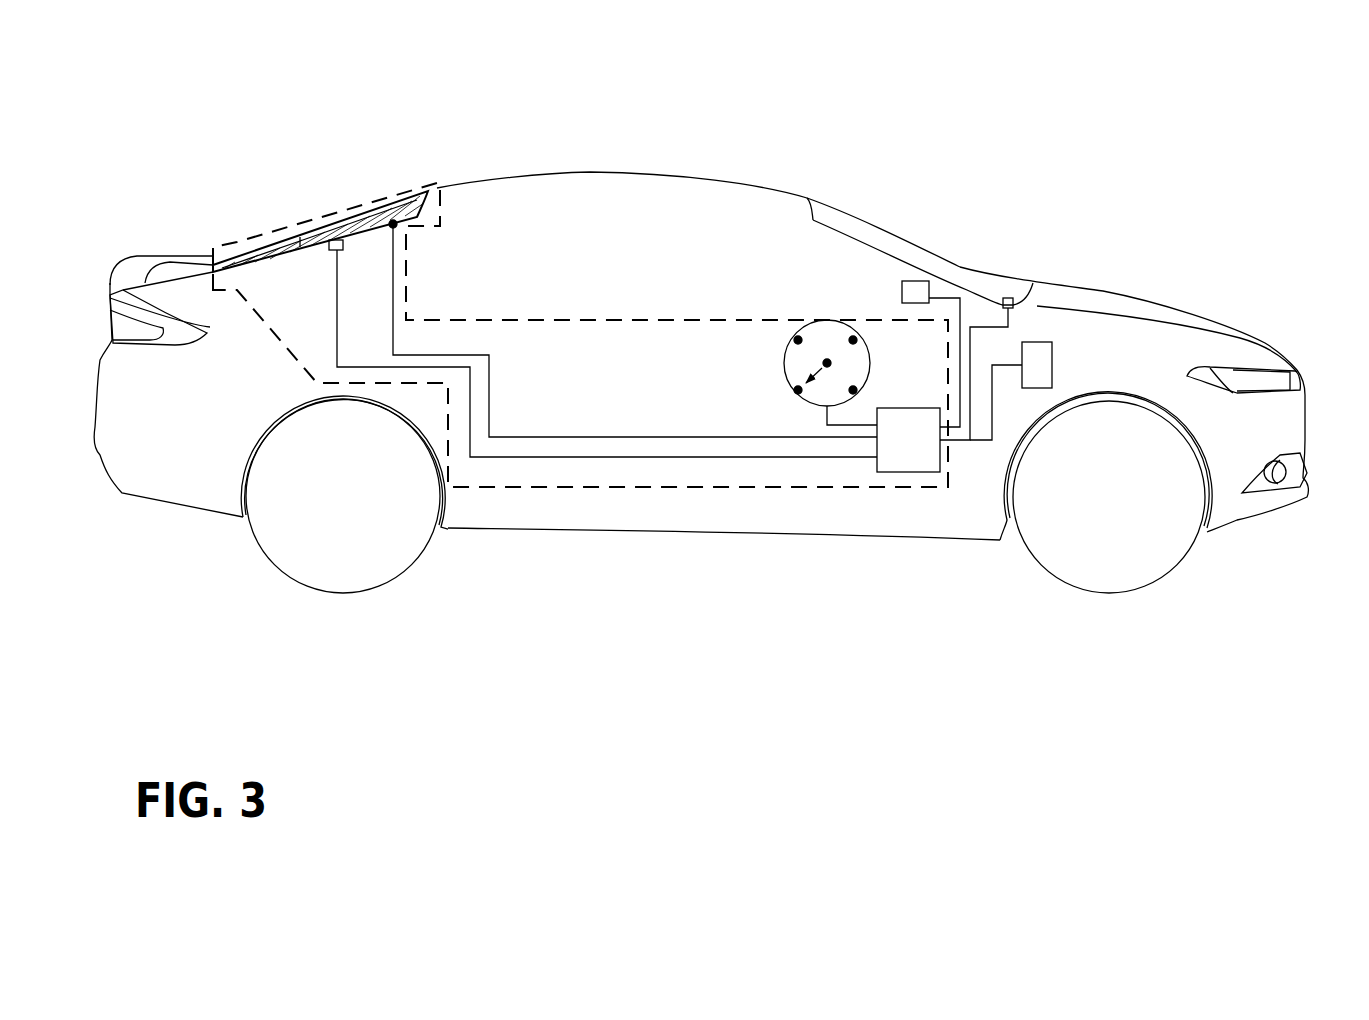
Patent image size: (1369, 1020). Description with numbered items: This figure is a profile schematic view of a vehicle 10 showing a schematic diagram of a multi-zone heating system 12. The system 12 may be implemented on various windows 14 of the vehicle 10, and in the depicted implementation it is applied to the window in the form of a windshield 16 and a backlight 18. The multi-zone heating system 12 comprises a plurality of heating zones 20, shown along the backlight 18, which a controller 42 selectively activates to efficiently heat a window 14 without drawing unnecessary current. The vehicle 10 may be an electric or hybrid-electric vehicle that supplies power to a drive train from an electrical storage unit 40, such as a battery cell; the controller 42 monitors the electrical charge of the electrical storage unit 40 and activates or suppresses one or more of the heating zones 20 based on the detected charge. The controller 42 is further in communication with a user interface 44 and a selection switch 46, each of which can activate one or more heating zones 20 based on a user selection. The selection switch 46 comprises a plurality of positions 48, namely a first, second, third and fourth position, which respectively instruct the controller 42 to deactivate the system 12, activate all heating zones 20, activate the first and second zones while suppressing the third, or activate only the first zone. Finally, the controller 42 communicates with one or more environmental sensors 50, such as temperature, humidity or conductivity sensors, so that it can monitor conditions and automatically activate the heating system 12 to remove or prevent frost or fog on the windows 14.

The vehicle 10 is at (1217, 302).
The multi-zone heating system 12 is at (706, 147).
The window 14 is at (1128, 318).
The windshield 16 is at (847, 217).
The backlight 18 is at (395, 190).
The heating zones 20 is at (365, 198).
The electrical storage unit 40 is at (1042, 365).
The controller 42 is at (902, 450).
The user interface 44 is at (917, 287).
The selection switch 46 is at (818, 322).
The positions 48 is at (858, 404).
The environmental sensors 50 is at (1013, 297).